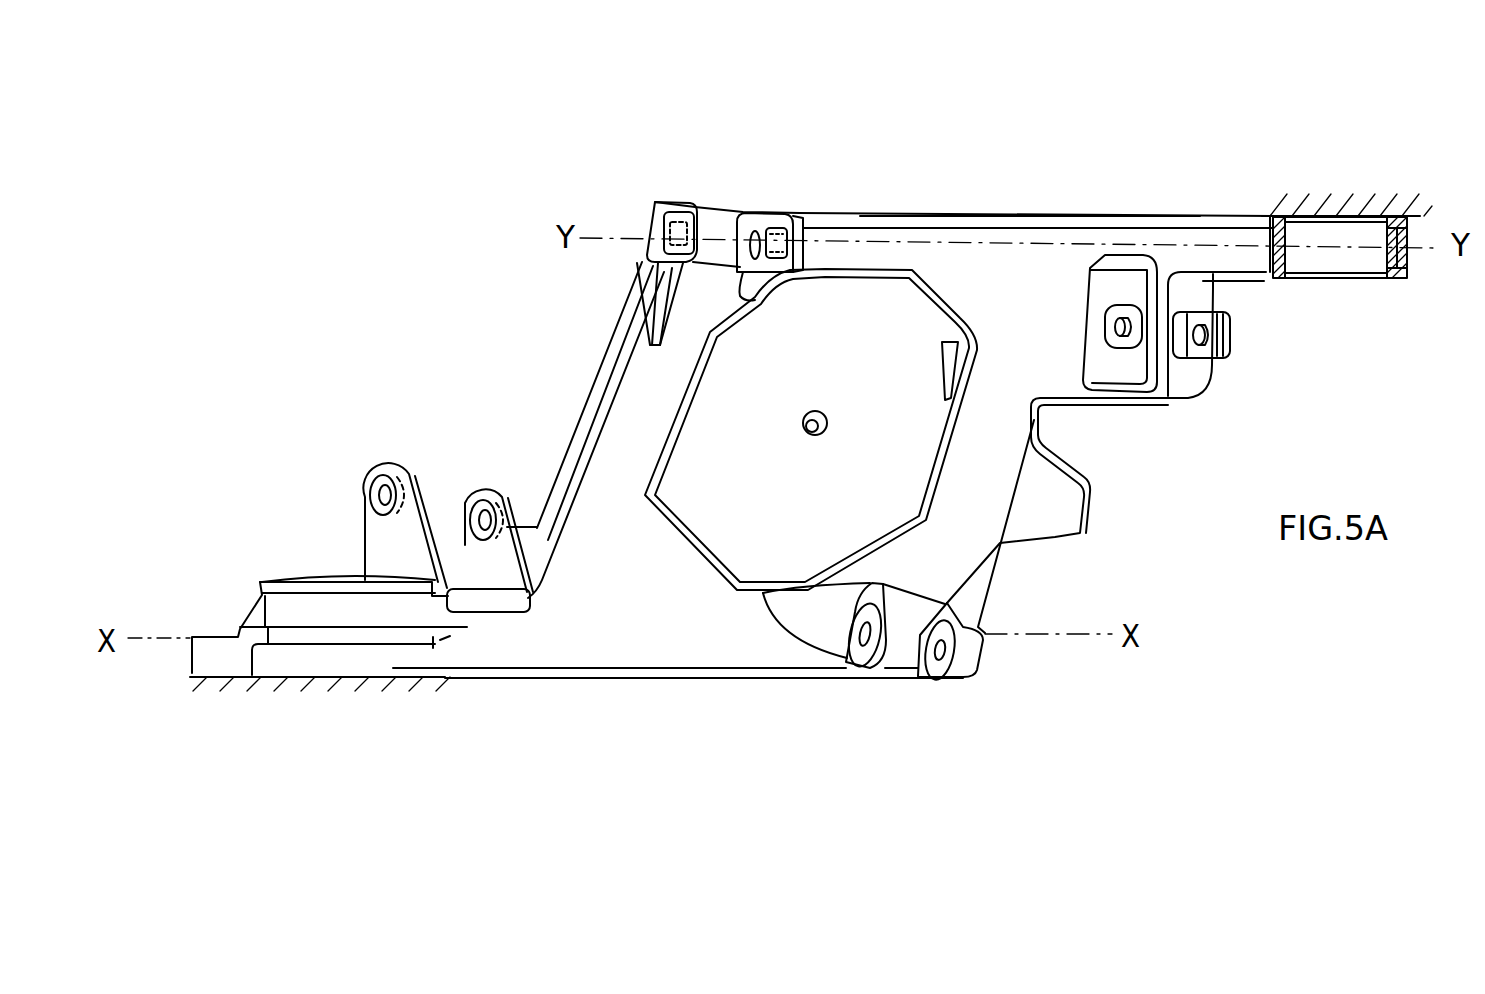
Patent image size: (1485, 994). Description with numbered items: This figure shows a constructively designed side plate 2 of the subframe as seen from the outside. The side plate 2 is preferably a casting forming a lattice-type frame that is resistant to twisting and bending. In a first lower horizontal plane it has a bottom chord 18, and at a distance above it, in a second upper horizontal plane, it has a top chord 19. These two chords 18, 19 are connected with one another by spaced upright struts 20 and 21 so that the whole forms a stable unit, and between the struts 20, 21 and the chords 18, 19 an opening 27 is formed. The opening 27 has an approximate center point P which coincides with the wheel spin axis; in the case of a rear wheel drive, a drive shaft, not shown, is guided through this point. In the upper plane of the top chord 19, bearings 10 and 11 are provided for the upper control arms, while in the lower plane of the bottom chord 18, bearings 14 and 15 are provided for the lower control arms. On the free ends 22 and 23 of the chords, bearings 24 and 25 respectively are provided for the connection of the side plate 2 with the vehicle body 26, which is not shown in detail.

The side plate 2 is at (978, 202).
The bearing 10 is at (728, 220).
The bearing 11 is at (1167, 343).
The bearing 14 is at (447, 495).
The bearing 15 is at (907, 643).
The bottom chord 18 is at (542, 653).
The top chord 19 is at (926, 215).
The upright strut 20 is at (633, 395).
The upright strut 21 is at (1003, 433).
The free end 22 is at (322, 548).
The free end 23 is at (1258, 178).
The bearing 24 is at (1317, 262).
The bearing 25 is at (343, 630).
The vehicle body 26 is at (1320, 207).
The opening 27 is at (850, 524).
The center point P is at (812, 438).